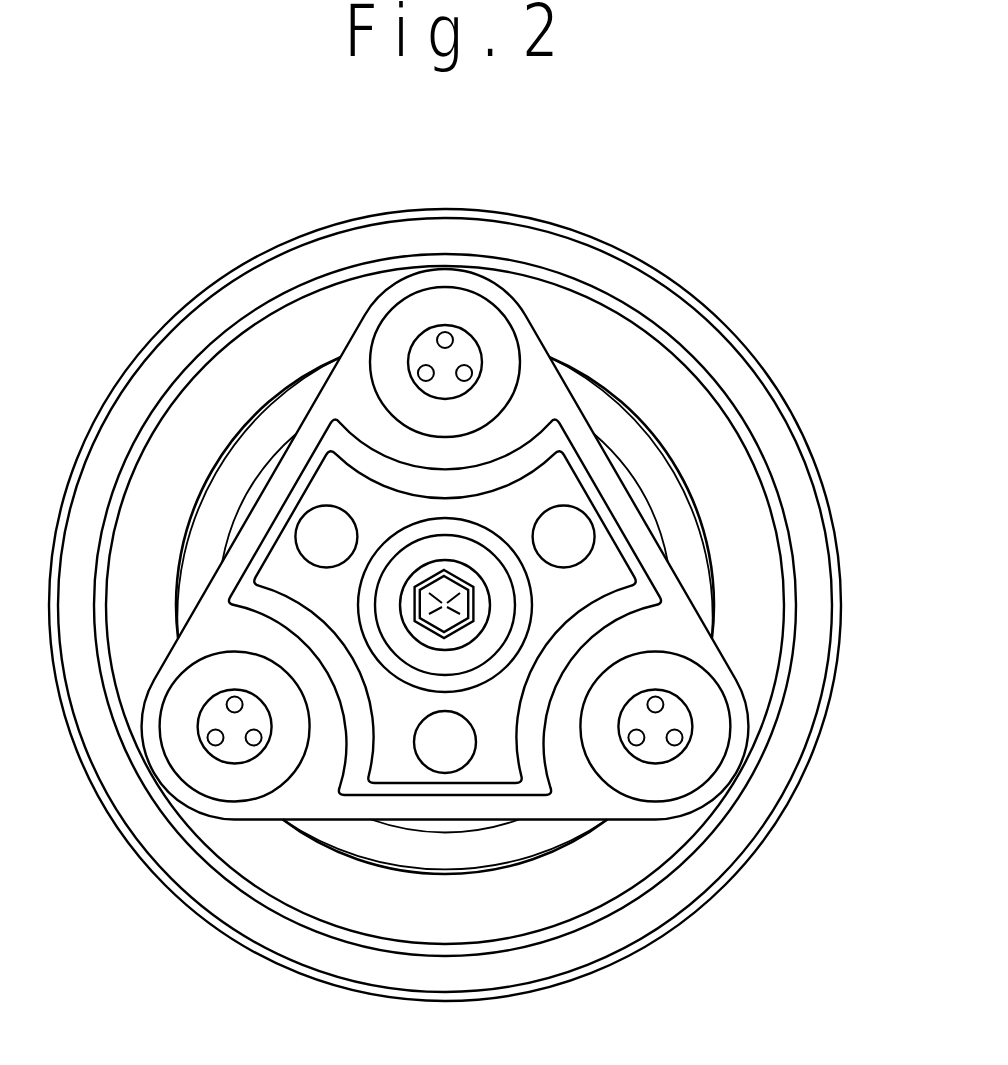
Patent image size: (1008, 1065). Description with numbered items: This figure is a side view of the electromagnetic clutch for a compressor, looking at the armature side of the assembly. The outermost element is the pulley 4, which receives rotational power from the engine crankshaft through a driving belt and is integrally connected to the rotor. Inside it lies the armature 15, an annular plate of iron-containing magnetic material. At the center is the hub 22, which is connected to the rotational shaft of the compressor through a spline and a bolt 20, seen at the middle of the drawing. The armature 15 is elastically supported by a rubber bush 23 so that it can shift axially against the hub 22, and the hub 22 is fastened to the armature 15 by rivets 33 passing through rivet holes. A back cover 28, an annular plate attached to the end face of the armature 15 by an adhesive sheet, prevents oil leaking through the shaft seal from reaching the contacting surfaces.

The pulley 4 is at (500, 240).
The armature 15 is at (736, 520).
The bolt 20 is at (460, 600).
The hub 22 is at (535, 375).
The rubber bush 23 is at (703, 733).
The back cover 28 is at (633, 462).
The rivets 33 is at (653, 742).